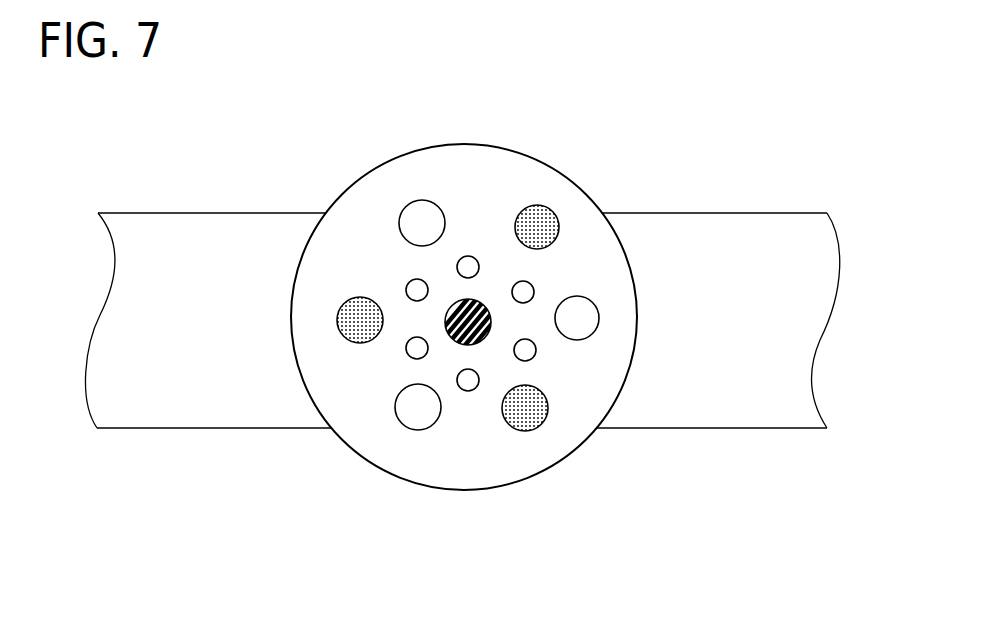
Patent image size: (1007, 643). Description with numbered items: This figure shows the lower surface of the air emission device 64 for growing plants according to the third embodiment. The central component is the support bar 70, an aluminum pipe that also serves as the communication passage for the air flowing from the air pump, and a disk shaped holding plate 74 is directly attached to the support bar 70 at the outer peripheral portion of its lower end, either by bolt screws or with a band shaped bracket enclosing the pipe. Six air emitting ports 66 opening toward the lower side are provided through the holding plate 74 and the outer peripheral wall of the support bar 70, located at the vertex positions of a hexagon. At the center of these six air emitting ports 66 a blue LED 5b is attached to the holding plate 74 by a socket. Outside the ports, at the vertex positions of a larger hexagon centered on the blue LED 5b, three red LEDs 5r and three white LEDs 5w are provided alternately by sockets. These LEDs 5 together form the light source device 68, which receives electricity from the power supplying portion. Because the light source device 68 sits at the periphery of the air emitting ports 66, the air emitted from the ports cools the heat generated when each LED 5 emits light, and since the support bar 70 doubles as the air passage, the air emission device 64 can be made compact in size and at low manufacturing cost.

The air emission device for growing plants 64 is at (462, 346).
The support bar 70 is at (220, 225).
The holding plate 74 is at (578, 228).
The light source device 68 is at (330, 465).
The air emitting ports 66 is at (520, 360).
The LED 5 is at (442, 359).
The blue LED 5b is at (447, 318).
The white LEDs 5w is at (435, 215).
The red LEDs 5r is at (352, 337).